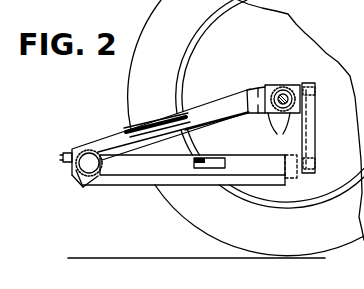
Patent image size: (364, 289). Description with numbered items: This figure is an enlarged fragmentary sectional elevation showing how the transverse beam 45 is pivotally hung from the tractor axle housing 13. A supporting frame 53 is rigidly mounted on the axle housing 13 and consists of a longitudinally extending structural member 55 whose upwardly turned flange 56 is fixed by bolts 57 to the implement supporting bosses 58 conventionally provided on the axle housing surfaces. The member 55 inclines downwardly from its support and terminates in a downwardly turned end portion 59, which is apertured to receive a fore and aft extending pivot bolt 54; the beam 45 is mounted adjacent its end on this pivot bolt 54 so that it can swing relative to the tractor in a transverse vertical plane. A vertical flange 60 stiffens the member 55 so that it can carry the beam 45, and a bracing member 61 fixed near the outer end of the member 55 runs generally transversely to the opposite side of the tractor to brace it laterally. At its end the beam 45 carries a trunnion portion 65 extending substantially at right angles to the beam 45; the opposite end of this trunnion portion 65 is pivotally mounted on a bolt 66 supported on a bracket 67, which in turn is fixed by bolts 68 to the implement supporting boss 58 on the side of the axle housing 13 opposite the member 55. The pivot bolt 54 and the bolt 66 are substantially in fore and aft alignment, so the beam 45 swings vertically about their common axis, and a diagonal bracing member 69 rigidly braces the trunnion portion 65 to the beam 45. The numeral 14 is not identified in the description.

The axle housing 13 is at (281, 92).
The bearing 14 is at (286, 92).
The beam 45 is at (84, 188).
The supporting frame 53 is at (214, 100).
The pivot bolt 54 is at (66, 160).
The structural member 55 is at (225, 112).
The upwardly turned flange 56 is at (267, 100).
The bolts 57 is at (263, 95).
The implement supporting bosses 58 is at (281, 133).
The downwardly turned end portion 59 is at (72, 173).
The vertical flange 60 is at (185, 94).
The bracing member 61 is at (190, 124).
The trunnion portion 65 is at (134, 164).
The bolt 66 is at (313, 170).
The bracket 67 is at (309, 132).
The bolts 68 is at (326, 92).
The diagonal bracing member 69 is at (205, 166).